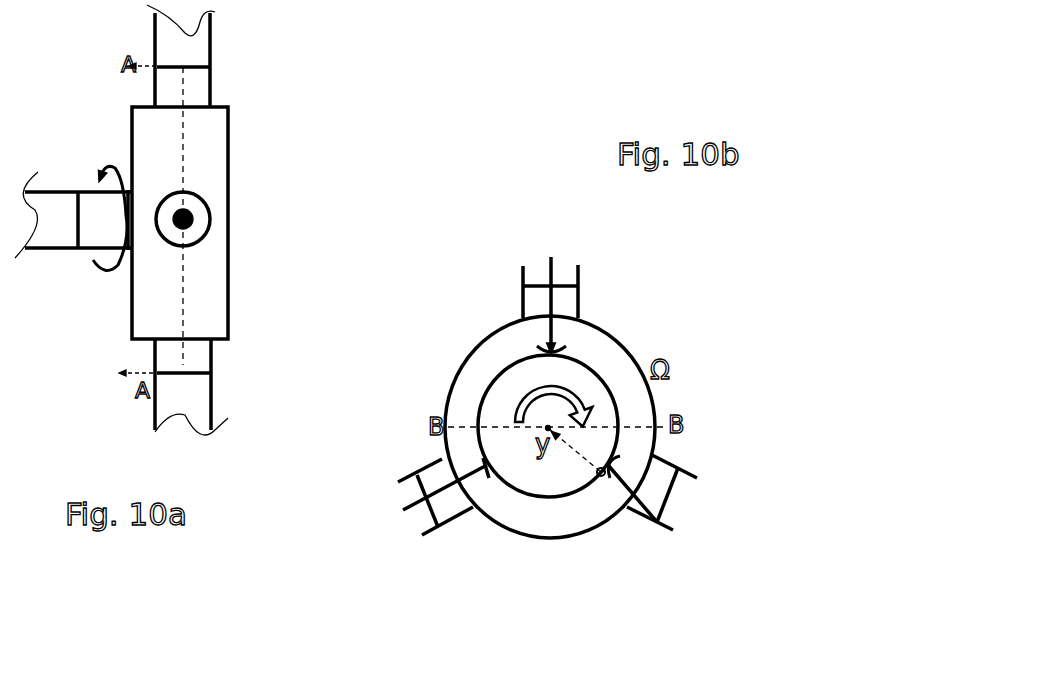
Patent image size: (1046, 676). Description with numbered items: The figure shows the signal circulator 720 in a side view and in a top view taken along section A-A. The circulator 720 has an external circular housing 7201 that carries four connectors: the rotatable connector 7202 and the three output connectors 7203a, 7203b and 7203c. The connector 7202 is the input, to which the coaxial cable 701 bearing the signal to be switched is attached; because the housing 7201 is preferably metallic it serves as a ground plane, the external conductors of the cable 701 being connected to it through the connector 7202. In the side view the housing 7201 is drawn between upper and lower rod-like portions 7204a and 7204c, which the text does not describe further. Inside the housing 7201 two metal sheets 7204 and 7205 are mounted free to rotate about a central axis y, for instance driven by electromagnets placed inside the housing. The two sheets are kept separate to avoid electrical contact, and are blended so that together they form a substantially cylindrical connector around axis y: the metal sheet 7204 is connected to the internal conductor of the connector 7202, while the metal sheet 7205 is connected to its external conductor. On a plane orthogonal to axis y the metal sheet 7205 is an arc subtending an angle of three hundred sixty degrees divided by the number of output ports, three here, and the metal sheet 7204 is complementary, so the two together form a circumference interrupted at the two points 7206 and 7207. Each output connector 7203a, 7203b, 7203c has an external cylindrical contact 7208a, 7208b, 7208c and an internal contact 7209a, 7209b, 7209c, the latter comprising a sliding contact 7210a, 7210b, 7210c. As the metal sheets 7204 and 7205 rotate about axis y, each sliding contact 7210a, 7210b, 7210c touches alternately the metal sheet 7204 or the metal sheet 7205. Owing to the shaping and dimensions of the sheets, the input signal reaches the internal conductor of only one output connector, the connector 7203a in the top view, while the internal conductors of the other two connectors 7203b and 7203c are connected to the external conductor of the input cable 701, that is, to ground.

In FIG. 10A, the circulator 720 is at (98, 104).
In FIG. 10A, the coaxial cable 701 is at (55, 230).
In FIG. 10A, the external circular housing 7201 is at (150, 300).
In FIG. 10A, the rotatable connector 7202 is at (97, 210).
In FIG. 10A, the output connector 7203a is at (212, 88).
In FIG. 10B, the output connector 7203a is at (530, 295).
In FIG. 10A, the output connector 7203b is at (213, 220).
In FIG. 10B, the output connector 7203b is at (658, 473).
In FIG. 10A, the output connector 7203c is at (293, 367).
In FIG. 10B, the output connector 7203c is at (448, 518).
In FIG. 10B, the metal sheet 7204 is at (482, 384).
In FIG. 10A, the upper rod 7204a is at (212, 27).
In FIG. 10A, the lower rod 7204c is at (173, 402).
In FIG. 10B, the metal sheet 7205 is at (603, 378).
In FIG. 10B, the interruption point 7206 is at (567, 348).
In FIG. 10B, the interruption point 7207 is at (603, 487).
In FIG. 10B, the external cylindrical contact 7208a is at (580, 290).
In FIG. 10B, the external cylindrical contact 7208b is at (645, 527).
In FIG. 10B, the external cylindrical contact 7208c is at (420, 460).
In FIG. 10B, the internal contact 7209a is at (545, 280).
In FIG. 10B, the internal contact 7209b is at (675, 495).
In FIG. 10B, the internal contact 7209c is at (428, 492).
In FIG. 10B, the sliding contact 7210a is at (530, 342).
In FIG. 10B, the sliding contact 7210b is at (624, 452).
In FIG. 10B, the sliding contact 7210c is at (559, 474).